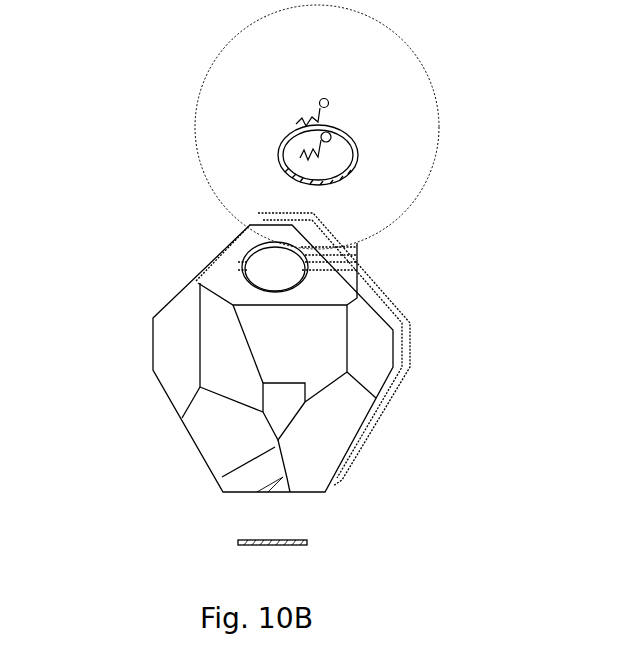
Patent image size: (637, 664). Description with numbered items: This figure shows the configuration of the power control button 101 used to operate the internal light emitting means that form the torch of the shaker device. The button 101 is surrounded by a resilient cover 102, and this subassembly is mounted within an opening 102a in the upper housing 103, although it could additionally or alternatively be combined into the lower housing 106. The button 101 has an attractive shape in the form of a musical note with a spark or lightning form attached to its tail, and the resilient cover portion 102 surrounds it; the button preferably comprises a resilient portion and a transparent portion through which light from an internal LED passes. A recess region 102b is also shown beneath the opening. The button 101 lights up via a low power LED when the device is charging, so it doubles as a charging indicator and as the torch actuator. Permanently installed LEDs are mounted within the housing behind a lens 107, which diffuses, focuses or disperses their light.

The power control button 101 is at (320, 101).
The resilient cover 102 is at (295, 155).
The opening 102a is at (270, 272).
The button recess 102b is at (322, 295).
The upper housing 103 is at (168, 358).
The lower housing 106 is at (348, 473).
The lens 107 is at (277, 542).